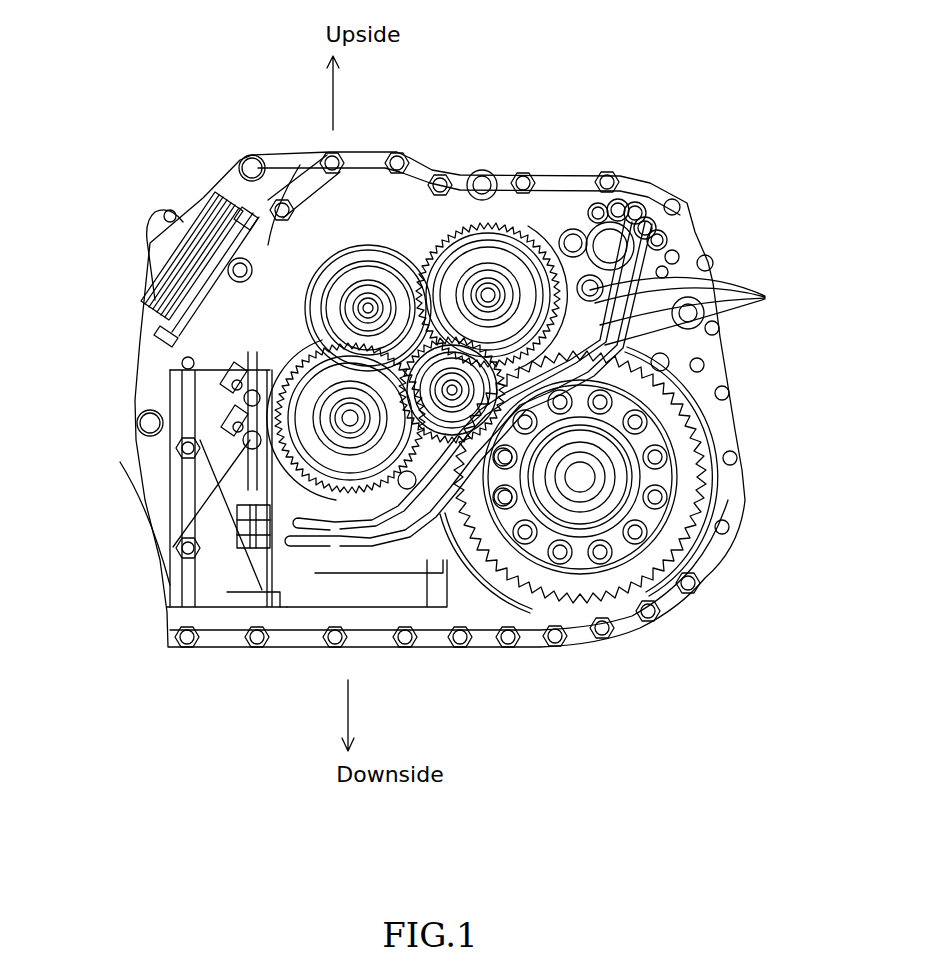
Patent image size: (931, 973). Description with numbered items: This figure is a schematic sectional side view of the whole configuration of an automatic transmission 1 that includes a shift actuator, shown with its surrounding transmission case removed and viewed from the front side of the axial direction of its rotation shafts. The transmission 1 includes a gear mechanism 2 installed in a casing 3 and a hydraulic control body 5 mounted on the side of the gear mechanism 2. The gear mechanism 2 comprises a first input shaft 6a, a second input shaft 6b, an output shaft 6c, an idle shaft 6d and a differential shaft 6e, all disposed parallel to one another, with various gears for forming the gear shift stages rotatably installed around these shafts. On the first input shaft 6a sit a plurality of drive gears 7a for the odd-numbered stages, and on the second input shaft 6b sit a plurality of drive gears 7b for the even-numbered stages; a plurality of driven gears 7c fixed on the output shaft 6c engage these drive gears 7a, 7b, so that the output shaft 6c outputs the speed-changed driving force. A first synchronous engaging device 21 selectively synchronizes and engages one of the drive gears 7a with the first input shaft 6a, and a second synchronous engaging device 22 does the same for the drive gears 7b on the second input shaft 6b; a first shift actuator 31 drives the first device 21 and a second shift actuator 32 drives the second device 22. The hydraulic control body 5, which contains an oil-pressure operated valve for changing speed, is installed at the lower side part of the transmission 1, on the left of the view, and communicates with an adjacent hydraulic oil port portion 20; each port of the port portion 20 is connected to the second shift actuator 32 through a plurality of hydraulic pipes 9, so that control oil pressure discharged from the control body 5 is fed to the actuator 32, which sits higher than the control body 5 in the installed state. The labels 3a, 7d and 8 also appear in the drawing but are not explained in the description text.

The transmission 1 is at (485, 74).
The gear mechanism 2 is at (419, 230).
The casing 3 is at (706, 224).
The case flange 3a is at (358, 154).
The hydraulic control body 5 is at (163, 487).
The first input shaft 6a is at (274, 346).
The second input shaft 6b is at (489, 290).
The output shaft 6c is at (453, 398).
The idle shaft 6d is at (362, 298).
The differential shaft 6e is at (583, 480).
The drive gears 7a is at (238, 275).
The drive gears 7b is at (495, 240).
The driven gears 7c is at (418, 490).
The shaft 7d is at (360, 302).
The differential ring gear 8 is at (719, 453).
The hydraulic pipes 9 is at (752, 294).
The hydraulic oil port portion 20 is at (324, 592).
The first synchronous engaging device 21 is at (175, 290).
The second synchronous engaging device 22 is at (572, 214).
The first shift actuator 31 is at (201, 397).
The second shift actuator 32 is at (650, 213).